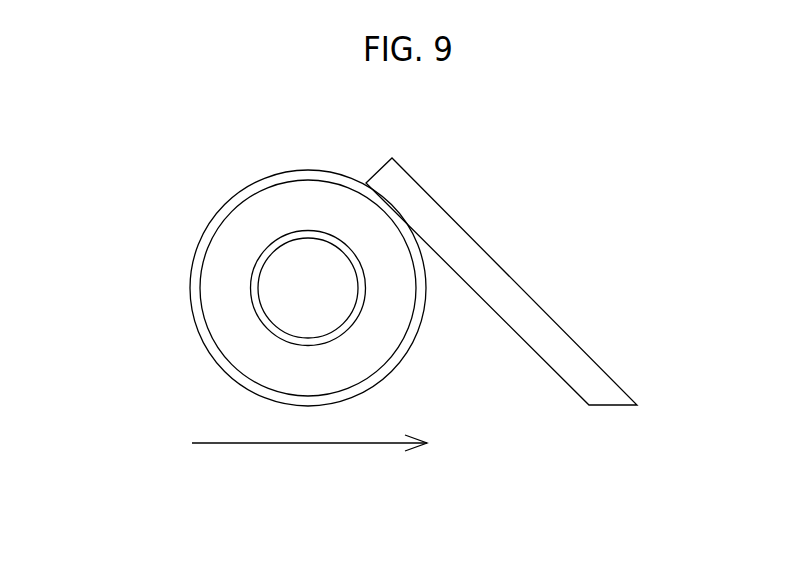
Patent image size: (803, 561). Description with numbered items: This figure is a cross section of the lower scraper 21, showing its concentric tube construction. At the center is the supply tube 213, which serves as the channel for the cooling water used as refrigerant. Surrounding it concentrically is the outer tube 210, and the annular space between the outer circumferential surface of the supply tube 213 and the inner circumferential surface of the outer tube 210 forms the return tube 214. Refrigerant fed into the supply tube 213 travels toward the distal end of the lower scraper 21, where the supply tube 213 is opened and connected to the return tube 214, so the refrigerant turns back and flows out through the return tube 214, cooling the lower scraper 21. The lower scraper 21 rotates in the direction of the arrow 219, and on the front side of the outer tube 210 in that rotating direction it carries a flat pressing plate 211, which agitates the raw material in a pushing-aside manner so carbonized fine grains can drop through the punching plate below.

The lower scraper 21 is at (225, 155).
The outer tube 210 is at (195, 323).
The pressing plate 211 is at (507, 270).
The supply tube 213 is at (273, 242).
The return tube 214 is at (222, 283).
The arrow 219 is at (265, 443).